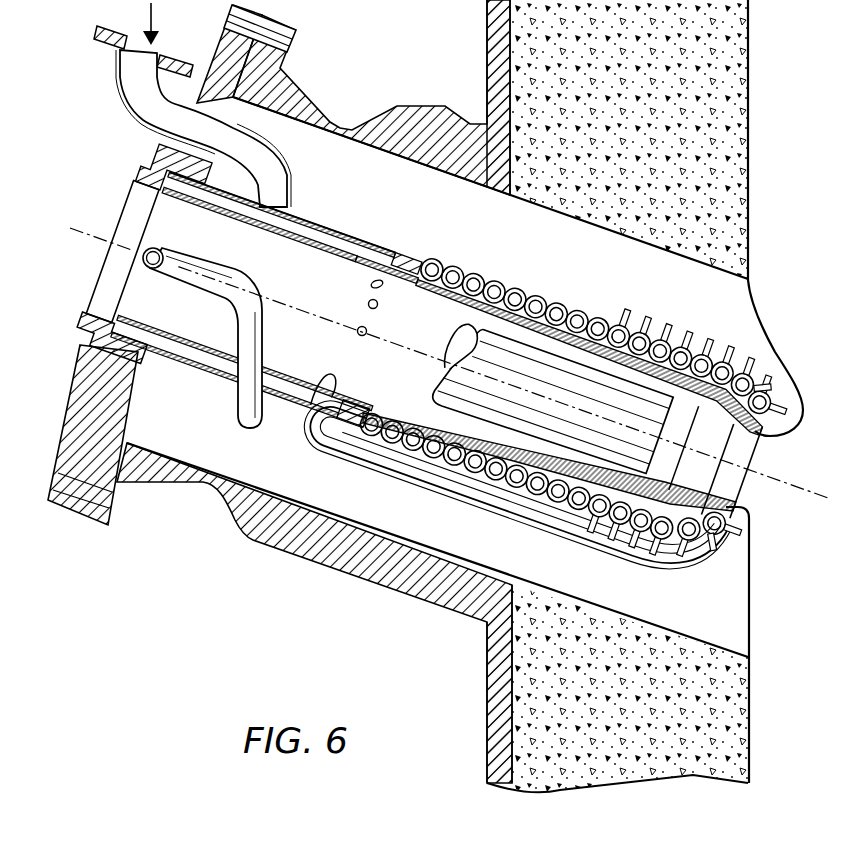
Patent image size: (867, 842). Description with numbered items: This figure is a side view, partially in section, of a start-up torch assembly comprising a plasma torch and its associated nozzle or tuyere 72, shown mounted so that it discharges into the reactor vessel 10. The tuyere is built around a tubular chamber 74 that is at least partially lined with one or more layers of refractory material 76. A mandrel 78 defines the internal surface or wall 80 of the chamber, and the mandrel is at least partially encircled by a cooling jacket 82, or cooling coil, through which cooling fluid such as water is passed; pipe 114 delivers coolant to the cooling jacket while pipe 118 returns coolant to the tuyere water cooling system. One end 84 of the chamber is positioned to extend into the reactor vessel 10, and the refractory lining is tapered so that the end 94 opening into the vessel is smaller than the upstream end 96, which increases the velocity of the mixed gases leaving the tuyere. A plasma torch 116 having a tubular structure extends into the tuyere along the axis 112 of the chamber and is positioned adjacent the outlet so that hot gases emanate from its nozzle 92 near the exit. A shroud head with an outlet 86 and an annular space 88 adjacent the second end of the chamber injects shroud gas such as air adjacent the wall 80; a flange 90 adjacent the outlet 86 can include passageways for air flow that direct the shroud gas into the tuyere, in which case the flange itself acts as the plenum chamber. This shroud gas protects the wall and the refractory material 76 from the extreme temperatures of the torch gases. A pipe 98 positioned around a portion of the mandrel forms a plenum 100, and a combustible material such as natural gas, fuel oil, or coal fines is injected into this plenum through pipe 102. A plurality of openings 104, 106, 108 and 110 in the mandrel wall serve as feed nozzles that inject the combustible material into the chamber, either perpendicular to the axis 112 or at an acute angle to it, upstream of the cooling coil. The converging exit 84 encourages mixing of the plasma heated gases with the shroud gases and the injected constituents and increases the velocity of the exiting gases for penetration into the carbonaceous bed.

The reactor vessel 10 is at (720, 108).
The nozzle or tuyere 72 is at (770, 311).
The tubular chamber 74 is at (521, 333).
The refractory material 76 is at (656, 490).
The mandrel 78 is at (360, 257).
The internal surface or wall 80 is at (317, 383).
The cooling jacket or cooling coil 82 is at (640, 340).
The chamber end 84 is at (745, 456).
The outlet 86 is at (127, 288).
The annular space 88 is at (83, 312).
The flange 90 is at (70, 438).
The nozzle of the plasma torch 92 is at (664, 440).
The open end 94 is at (743, 487).
The upstream end 96 is at (547, 307).
The pipe 98 is at (300, 220).
The plenum 100 is at (330, 240).
The pipe 102 is at (125, 103).
The opening 104 is at (380, 272).
The opening 106 is at (368, 289).
The opening 108 is at (374, 307).
The opening 110 is at (357, 333).
The axis of the chamber 112 is at (427, 358).
The pipe 114 is at (420, 483).
The plasma torch 116 is at (481, 330).
The pipe 118 is at (247, 407).